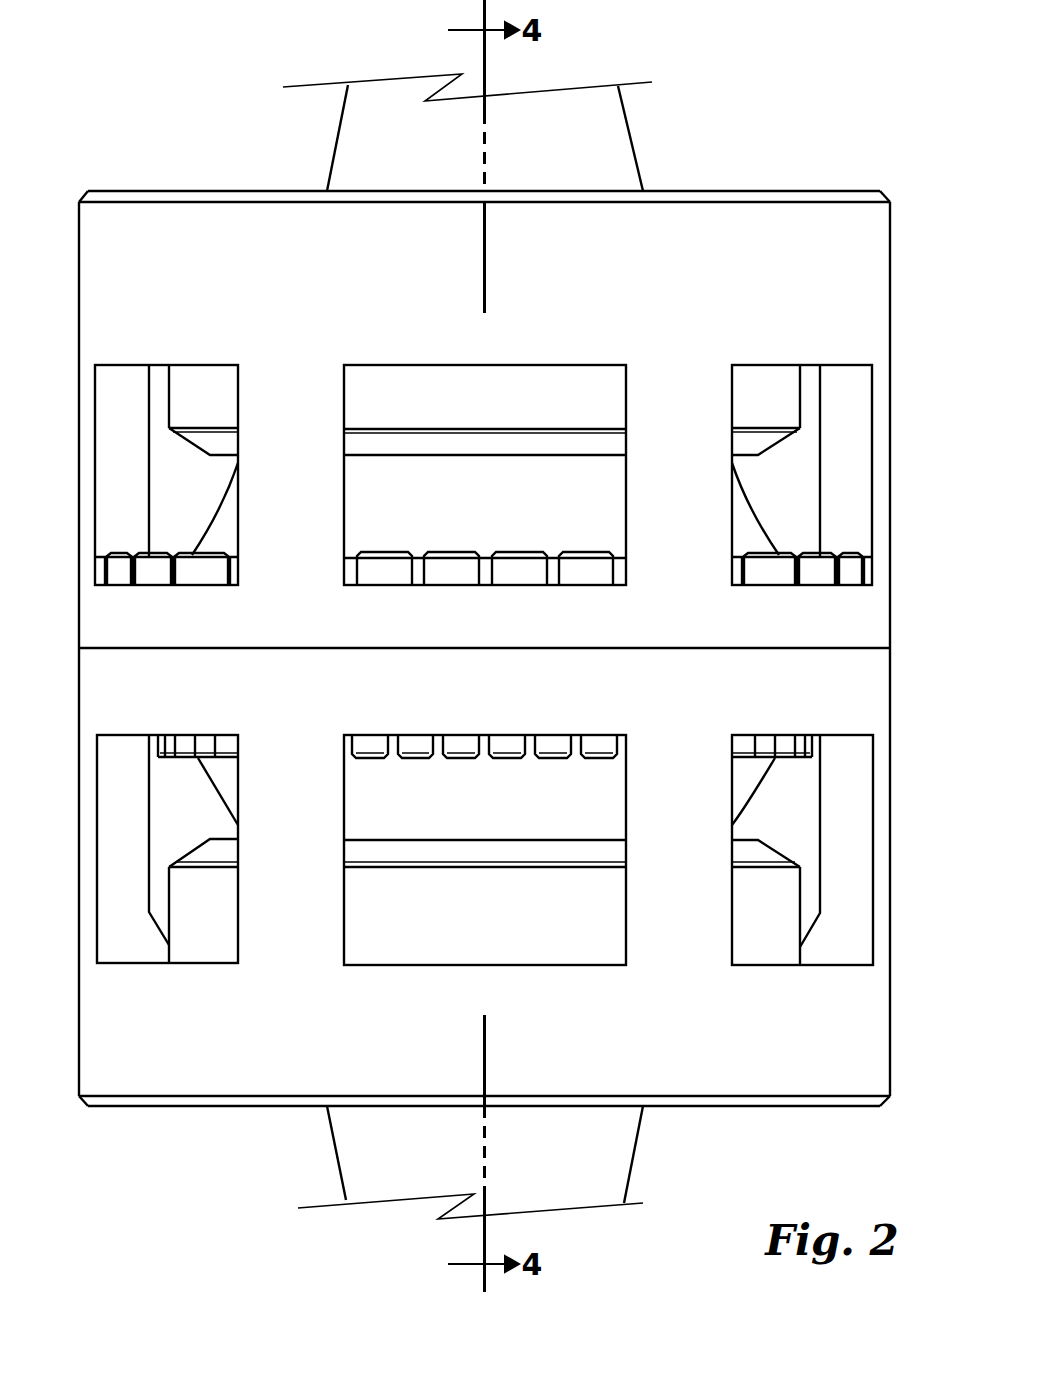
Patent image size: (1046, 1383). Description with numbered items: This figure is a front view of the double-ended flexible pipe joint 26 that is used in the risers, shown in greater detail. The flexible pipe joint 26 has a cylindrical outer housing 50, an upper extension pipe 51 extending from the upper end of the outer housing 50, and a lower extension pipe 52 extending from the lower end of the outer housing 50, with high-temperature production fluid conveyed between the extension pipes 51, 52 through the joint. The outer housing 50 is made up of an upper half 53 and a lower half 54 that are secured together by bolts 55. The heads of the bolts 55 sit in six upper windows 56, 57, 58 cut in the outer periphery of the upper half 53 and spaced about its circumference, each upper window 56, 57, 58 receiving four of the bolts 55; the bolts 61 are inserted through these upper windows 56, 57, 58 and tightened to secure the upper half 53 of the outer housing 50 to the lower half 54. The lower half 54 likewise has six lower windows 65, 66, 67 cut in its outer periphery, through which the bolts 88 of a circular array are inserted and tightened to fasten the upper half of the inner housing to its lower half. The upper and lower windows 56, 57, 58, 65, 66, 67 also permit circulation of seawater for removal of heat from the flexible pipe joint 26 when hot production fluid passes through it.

The double-ended flexible pipe joint 26 is at (802, 113).
The cylindrical outer housing 50 is at (510, 628).
The upper extension pipe 51 is at (632, 128).
The lower extension pipe 52 is at (633, 1168).
The upper half of the outer housing 53 is at (888, 273).
The lower half of the outer housing 54 is at (892, 1027).
The bolts 55 is at (485, 543).
The upper window 56 is at (160, 364).
The upper window 57 is at (492, 453).
The upper window 58 is at (811, 364).
The bolts 61 is at (457, 552).
The lower window 65 is at (202, 963).
The lower window 66 is at (495, 875).
The lower window 67 is at (808, 965).
The bolts 88 is at (462, 752).